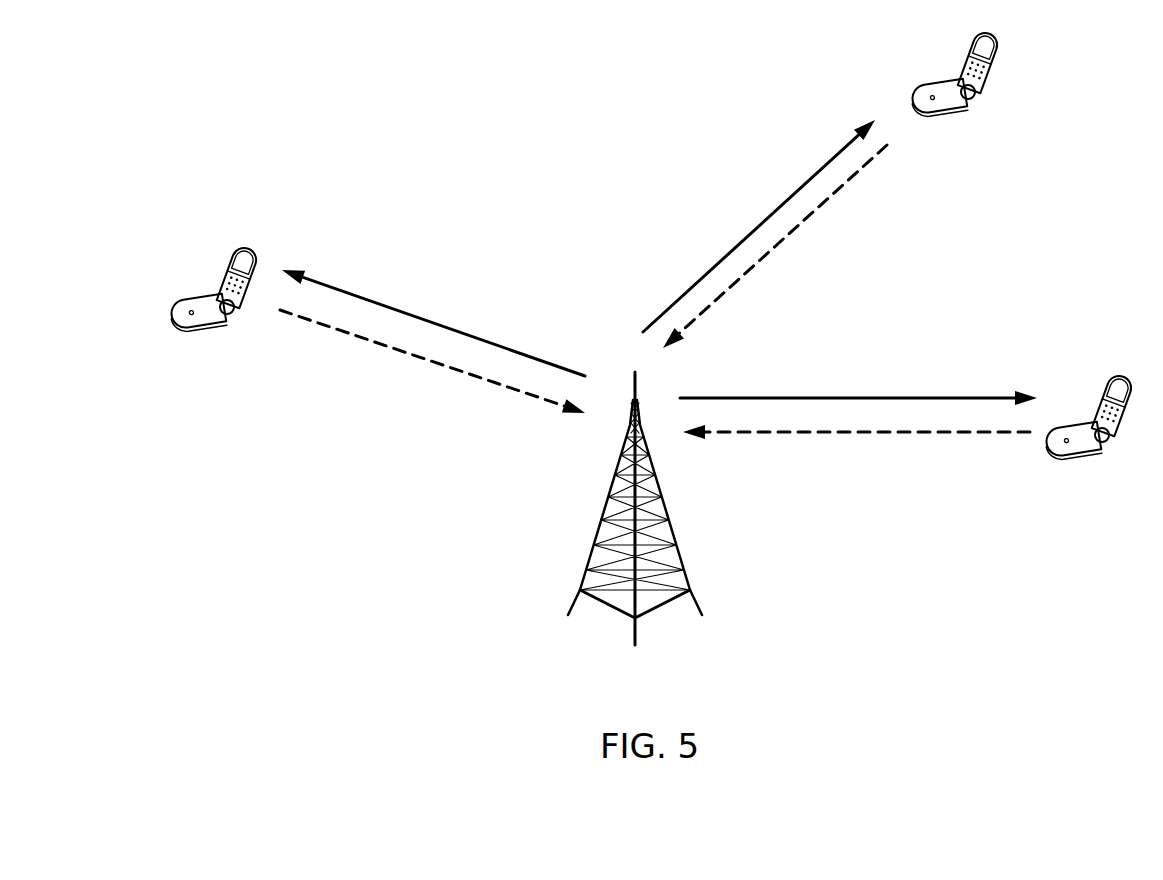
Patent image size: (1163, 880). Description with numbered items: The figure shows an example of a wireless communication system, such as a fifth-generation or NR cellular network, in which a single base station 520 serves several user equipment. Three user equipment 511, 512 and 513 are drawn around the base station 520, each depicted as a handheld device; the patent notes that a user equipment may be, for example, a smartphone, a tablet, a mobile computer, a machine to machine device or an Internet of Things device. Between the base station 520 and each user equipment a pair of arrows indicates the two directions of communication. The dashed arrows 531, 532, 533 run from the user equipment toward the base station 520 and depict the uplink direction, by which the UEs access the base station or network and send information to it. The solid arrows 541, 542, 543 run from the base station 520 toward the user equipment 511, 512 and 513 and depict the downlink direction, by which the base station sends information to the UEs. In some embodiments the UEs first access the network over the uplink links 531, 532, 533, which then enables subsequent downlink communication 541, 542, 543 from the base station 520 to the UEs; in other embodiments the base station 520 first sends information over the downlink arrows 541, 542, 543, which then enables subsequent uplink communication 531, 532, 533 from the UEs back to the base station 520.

The user equipment 511 is at (223, 325).
The user equipment 512 is at (1098, 453).
The user equipment 513 is at (966, 110).
The base station 520 is at (687, 575).
The dashed arrow (uplink direction) 531 is at (467, 373).
The dashed arrow (uplink direction) 532 is at (820, 437).
The dashed arrow (uplink direction) 533 is at (803, 222).
The arrow (downlink direction) 541 is at (375, 305).
The arrow (downlink direction) 542 is at (957, 395).
The arrow (downlink direction) 543 is at (805, 182).